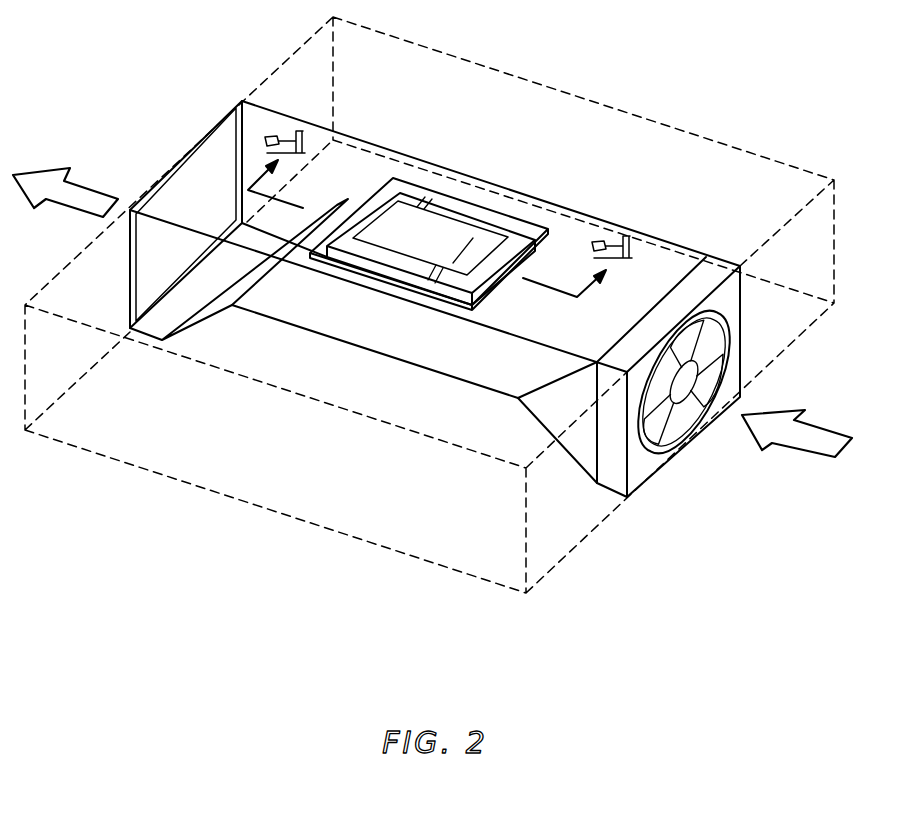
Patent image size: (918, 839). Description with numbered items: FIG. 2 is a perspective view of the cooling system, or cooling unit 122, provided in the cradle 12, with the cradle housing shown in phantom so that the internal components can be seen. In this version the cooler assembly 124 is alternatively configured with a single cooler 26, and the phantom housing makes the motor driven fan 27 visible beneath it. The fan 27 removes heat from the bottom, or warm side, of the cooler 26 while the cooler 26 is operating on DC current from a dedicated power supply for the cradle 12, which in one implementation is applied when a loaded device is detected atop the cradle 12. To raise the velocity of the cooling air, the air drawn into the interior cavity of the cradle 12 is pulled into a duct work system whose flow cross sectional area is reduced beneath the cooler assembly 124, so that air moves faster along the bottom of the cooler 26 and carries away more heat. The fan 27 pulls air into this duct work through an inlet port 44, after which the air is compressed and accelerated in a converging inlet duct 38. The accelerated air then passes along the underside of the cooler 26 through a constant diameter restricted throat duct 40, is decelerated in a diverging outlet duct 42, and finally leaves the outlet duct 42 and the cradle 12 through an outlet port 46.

The cradle 12 is at (834, 277).
The cooling unit 122 is at (448, 150).
The cooler assembly 124 is at (385, 232).
The cooler 26 is at (447, 230).
The outlet port 46 is at (200, 142).
The diverging outlet duct 42 is at (207, 314).
The restricted throat duct 40 is at (391, 350).
The converging inlet duct 38 is at (552, 405).
The inlet port 44 is at (658, 437).
The motor driven fan 27 is at (693, 410).